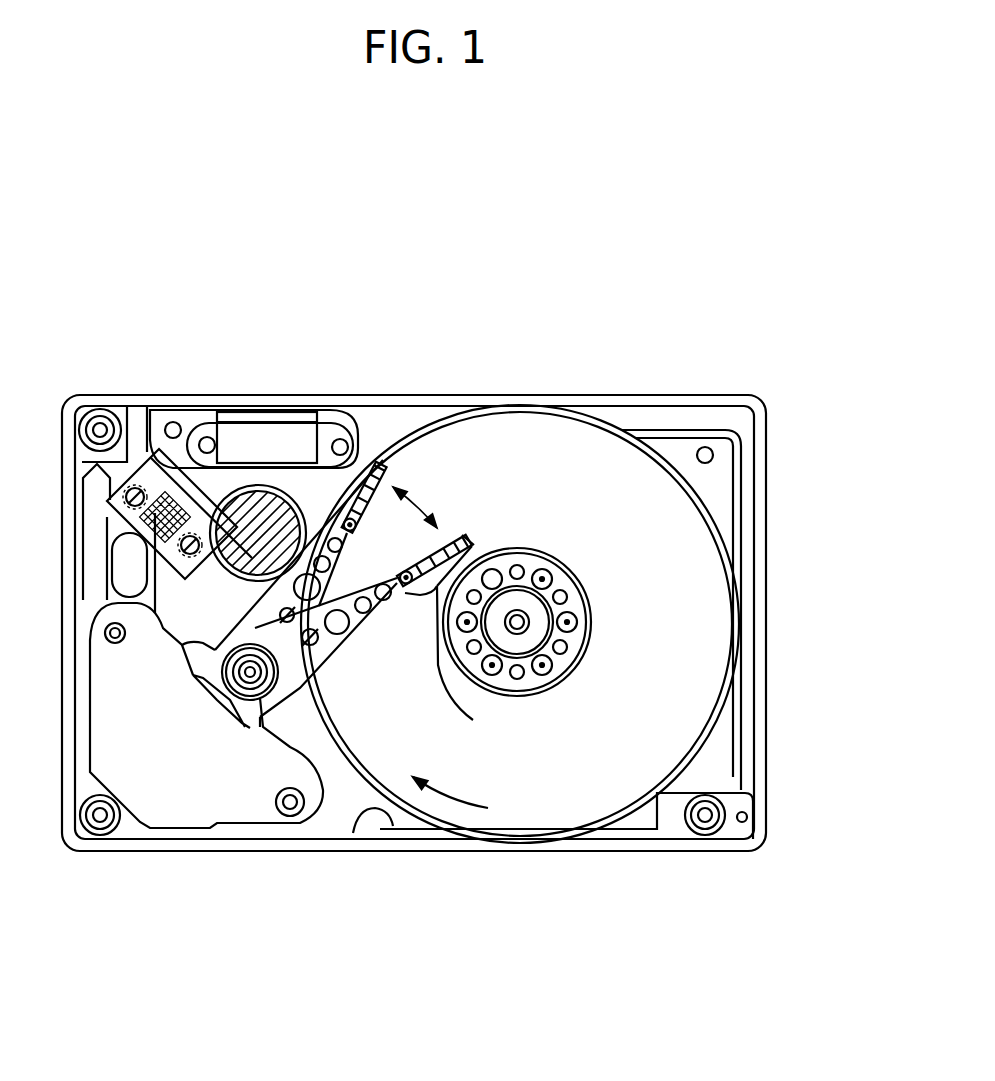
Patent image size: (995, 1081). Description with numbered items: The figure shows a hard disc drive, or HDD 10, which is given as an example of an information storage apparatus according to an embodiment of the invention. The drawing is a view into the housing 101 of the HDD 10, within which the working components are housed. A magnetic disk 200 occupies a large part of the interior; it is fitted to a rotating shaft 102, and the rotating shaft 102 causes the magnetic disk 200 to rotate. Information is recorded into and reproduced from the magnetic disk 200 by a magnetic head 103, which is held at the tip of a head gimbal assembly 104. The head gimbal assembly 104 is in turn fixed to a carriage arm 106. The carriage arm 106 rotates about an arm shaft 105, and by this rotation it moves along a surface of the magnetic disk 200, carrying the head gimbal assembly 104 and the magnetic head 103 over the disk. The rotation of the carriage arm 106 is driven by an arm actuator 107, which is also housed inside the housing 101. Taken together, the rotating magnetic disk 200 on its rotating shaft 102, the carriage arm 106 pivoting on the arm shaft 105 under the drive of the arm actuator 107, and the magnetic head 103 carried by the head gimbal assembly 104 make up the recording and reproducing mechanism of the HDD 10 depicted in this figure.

The HDD 10 is at (718, 305).
The housing 101 is at (622, 397).
The rotating shaft 102 is at (537, 621).
The magnetic head 103 is at (470, 538).
The head gimbal assembly 104 is at (473, 720).
The arm shaft 105 is at (250, 683).
The carriage arm 106 is at (320, 655).
The arm actuator 107 is at (157, 790).
The magnetic disk 200 is at (710, 583).